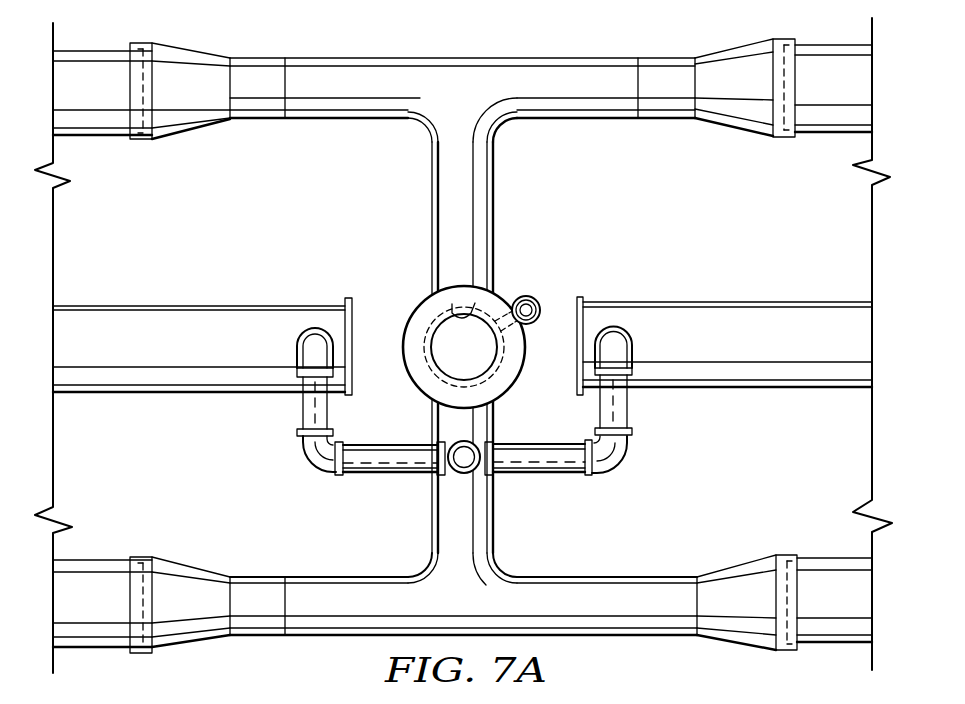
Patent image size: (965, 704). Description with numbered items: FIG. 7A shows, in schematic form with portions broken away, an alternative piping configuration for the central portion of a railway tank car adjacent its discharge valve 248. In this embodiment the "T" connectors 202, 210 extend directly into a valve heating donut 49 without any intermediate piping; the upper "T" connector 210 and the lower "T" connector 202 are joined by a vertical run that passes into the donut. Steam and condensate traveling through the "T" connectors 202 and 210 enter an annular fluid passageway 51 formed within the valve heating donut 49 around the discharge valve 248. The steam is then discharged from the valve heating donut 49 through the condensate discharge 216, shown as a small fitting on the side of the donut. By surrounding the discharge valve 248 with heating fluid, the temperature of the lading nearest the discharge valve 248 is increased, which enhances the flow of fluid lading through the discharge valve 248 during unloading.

The "T" connector 210 is at (462, 58).
The "T" connector 202 is at (323, 637).
The valve heating donut 49 is at (445, 330).
The annular fluid passageway 51 is at (417, 374).
The discharge valve 248 is at (452, 304).
The condensate discharge 216 is at (527, 296).